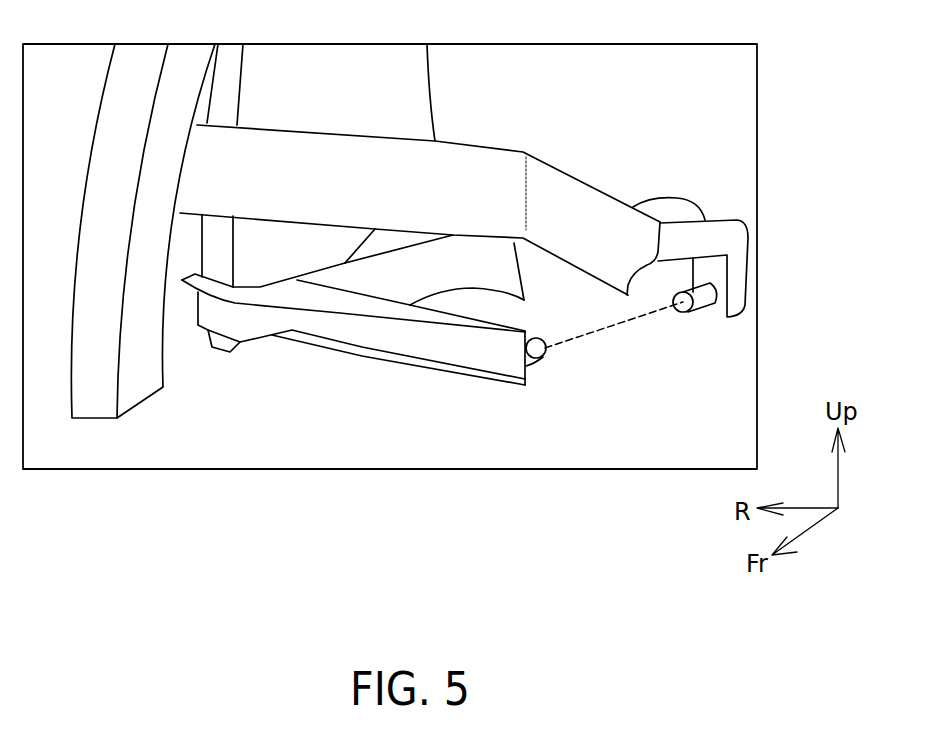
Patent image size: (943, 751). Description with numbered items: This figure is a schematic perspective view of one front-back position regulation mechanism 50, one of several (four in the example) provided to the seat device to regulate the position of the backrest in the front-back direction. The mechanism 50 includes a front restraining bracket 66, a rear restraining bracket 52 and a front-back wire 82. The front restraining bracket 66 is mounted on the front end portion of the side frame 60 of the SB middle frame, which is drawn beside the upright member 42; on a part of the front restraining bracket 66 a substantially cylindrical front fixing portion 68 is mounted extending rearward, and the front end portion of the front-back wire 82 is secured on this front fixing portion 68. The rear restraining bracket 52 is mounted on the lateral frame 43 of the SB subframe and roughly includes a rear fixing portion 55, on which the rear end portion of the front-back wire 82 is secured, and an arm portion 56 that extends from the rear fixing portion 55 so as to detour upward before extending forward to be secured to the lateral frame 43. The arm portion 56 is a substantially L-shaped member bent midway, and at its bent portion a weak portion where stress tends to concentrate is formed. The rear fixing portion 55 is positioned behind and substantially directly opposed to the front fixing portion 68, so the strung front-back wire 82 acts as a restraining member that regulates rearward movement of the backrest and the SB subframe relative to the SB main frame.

The seat back side frame 42 is at (130, 83).
The lateral frame 43 is at (567, 163).
The front-back position regulation mechanism 50 is at (595, 367).
The rear restraining bracket 52 is at (672, 186).
The rear fixing portion 55 is at (707, 312).
The arm portion 56 is at (744, 268).
The side frame 60 is at (407, 75).
The front restraining bracket 66 is at (438, 345).
The front fixing portion 68 is at (542, 362).
The front-back wire 82 is at (625, 320).